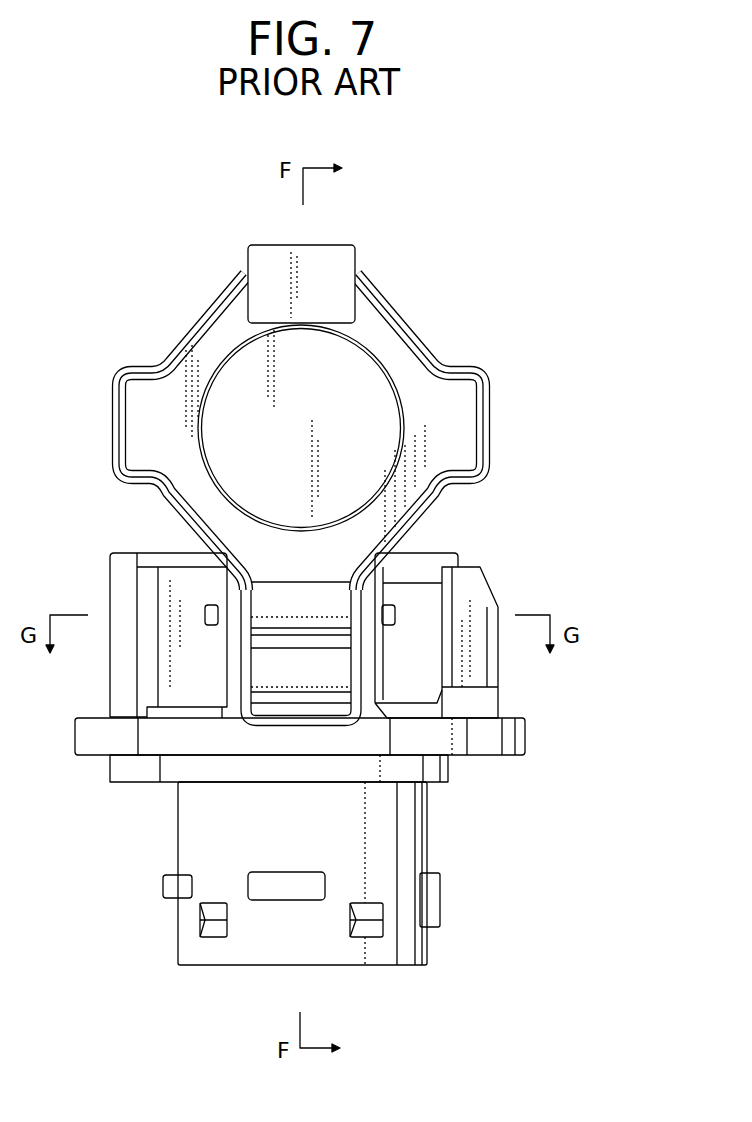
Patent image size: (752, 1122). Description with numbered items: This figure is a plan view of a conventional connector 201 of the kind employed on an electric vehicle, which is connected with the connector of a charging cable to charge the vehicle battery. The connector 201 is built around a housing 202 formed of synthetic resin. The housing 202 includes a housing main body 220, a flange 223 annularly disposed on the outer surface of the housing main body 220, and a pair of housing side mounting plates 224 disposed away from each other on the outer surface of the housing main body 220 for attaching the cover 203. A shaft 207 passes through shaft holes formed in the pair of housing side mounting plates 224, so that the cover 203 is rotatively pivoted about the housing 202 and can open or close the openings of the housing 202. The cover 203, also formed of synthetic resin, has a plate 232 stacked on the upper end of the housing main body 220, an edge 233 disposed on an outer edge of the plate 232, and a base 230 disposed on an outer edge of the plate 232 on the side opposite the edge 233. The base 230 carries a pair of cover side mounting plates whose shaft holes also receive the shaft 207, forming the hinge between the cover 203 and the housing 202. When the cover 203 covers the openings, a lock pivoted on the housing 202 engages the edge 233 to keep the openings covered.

The connector 201 is at (573, 234).
The cover 203 is at (496, 408).
The shaft 207 is at (395, 613).
The base 230 is at (307, 615).
The plate 232 is at (320, 413).
The edge 233 is at (310, 245).
The flange 223 is at (103, 742).
The housing side mounting plates 224 is at (365, 655).
The housing 202 is at (427, 837).
The housing main body 220 is at (177, 915).